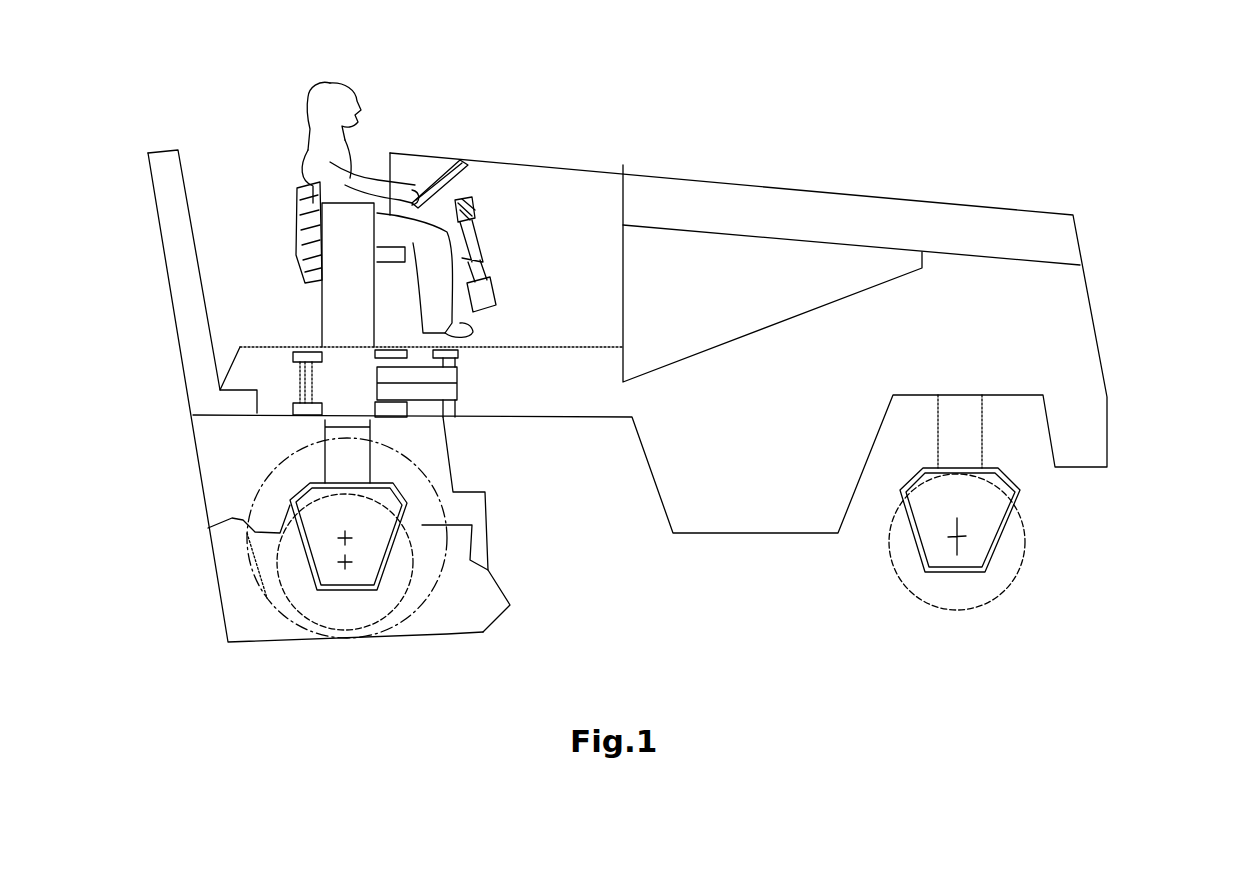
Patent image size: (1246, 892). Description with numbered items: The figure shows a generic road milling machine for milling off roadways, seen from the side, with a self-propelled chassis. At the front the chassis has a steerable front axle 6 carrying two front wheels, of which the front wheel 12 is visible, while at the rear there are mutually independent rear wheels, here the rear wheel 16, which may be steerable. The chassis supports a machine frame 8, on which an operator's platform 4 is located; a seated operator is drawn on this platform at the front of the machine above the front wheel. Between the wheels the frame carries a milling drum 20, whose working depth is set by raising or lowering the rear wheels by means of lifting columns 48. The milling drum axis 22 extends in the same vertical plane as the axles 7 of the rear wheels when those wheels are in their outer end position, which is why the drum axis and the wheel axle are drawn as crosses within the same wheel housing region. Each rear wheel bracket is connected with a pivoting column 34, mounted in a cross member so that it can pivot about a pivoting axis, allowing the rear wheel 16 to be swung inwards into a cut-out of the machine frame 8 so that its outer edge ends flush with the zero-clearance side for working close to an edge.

The operator's platform 4 is at (266, 118).
The machine frame 8 is at (248, 358).
The lifting column 48 is at (345, 458).
The milling drum axis 22 is at (340, 538).
The axle 7 is at (340, 566).
The rear wheel 16 is at (338, 613).
The milling drum 20 is at (423, 600).
The pivoting column 34 is at (957, 432).
The steerable front axle 6 is at (937, 537).
The front wheel 12 is at (975, 592).